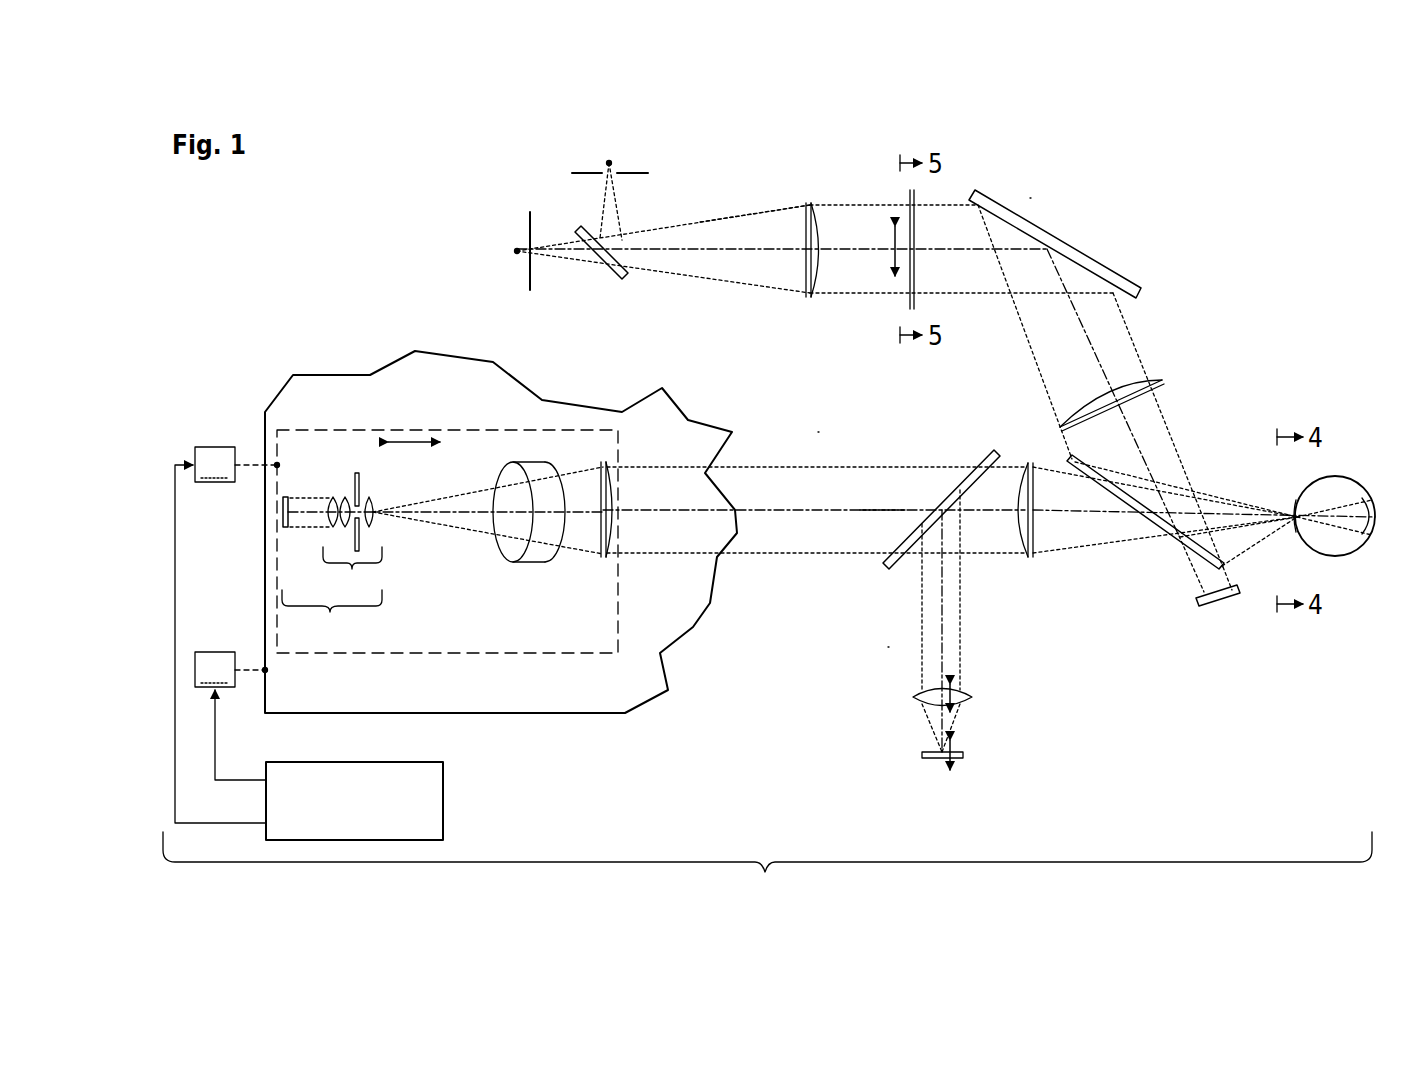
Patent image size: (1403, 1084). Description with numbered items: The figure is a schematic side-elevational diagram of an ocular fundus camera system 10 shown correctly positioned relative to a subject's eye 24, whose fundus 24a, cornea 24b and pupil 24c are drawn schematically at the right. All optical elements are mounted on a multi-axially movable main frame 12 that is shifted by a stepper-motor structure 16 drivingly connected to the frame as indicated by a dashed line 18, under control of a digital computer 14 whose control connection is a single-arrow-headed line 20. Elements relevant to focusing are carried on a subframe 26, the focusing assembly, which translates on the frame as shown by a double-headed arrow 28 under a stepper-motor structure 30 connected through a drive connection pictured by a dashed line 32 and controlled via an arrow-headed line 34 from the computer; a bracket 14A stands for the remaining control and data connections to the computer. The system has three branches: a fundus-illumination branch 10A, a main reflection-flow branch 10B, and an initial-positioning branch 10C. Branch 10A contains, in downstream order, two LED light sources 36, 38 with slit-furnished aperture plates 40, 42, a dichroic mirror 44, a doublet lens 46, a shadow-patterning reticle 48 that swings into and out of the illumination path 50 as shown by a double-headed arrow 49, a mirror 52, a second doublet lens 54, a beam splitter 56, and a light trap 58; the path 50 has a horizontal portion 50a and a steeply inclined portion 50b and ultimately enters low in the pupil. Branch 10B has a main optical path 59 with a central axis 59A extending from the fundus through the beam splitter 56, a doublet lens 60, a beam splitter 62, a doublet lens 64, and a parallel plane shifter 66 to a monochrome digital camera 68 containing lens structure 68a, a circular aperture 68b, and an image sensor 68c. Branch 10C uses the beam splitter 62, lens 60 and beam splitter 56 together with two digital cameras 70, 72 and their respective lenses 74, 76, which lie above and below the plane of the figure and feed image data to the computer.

The ocular fundus camera system 10 is at (395, 199).
The fundus-illumination branch 10A is at (1030, 198).
The reflection-flow branch 10B is at (818, 432).
The system initial-positioning branch 10C is at (888, 647).
The main frame 12 is at (350, 374).
The digital computer 14 is at (443, 785).
The bracket 14A is at (767, 879).
The stepper-motor structure 16 is at (215, 669).
The dashed line 18 is at (262, 667).
The single-arrow-headed line 20 is at (218, 760).
The eye 24 is at (1337, 474).
The fundus 24a is at (1362, 545).
The cornea 24b is at (1295, 527).
The pupil 24c is at (1288, 510).
The subframe 26 is at (562, 655).
The double-headed arrow 28 is at (410, 440).
The stepper-motor structure 30 is at (215, 464).
The dashed line 32 is at (270, 470).
The arrow-headed line 34 is at (177, 580).
The LED light source 36 is at (513, 252).
The LED light source 38 is at (611, 160).
The aperture plate 40 is at (525, 240).
The aperture plate 42 is at (648, 178).
The dichroic mirror 44 is at (616, 281).
The doublet lens 46 is at (805, 244).
The reticle 48 is at (907, 208).
The double-headed arrow 49 is at (891, 258).
The illumination path 50 is at (788, 258).
The illumination path portion 50a is at (748, 258).
The illumination path portion 50b is at (1100, 386).
The mirror 52 is at (1080, 262).
The doublet lens 54 is at (1165, 383).
The beam splitter 56 is at (1068, 460).
The light trap 58 is at (1220, 606).
The main optical path 59 is at (808, 509).
The central axis 59A is at (905, 505).
The doublet lens 60 is at (1035, 520).
The beam splitter 62 is at (992, 454).
The doublet lens 64 is at (598, 553).
The parallel plane shifter 66 is at (516, 563).
The monochrome digital camera 68 is at (332, 618).
The multi-element lens structure 68a is at (352, 575).
The circular aperture 68b is at (368, 488).
The electronic image sensor 68c is at (290, 496).
The monochrome digital camera 70 is at (930, 757).
The monochrome digital camera 72 is at (965, 755).
The lens 74 is at (922, 700).
The lens 76 is at (962, 692).